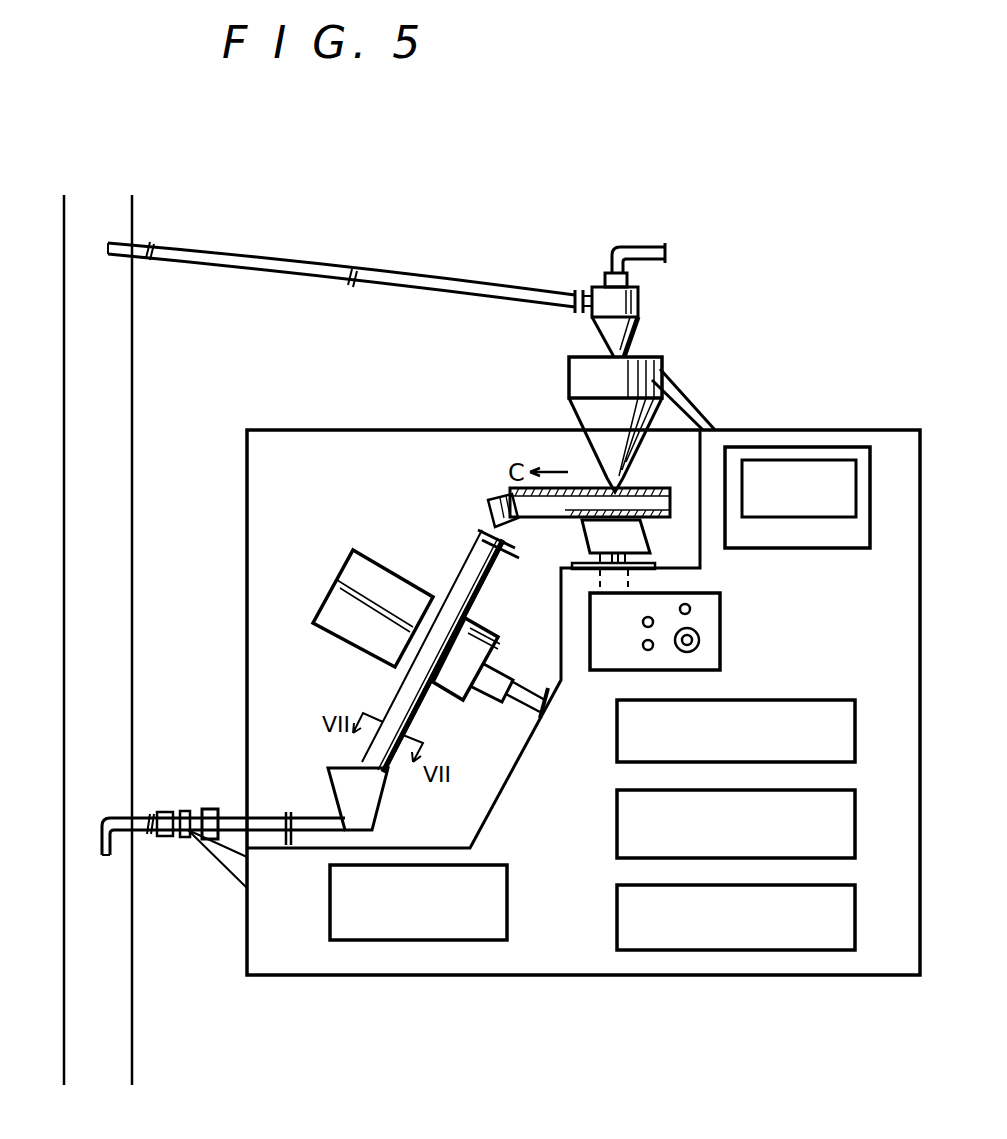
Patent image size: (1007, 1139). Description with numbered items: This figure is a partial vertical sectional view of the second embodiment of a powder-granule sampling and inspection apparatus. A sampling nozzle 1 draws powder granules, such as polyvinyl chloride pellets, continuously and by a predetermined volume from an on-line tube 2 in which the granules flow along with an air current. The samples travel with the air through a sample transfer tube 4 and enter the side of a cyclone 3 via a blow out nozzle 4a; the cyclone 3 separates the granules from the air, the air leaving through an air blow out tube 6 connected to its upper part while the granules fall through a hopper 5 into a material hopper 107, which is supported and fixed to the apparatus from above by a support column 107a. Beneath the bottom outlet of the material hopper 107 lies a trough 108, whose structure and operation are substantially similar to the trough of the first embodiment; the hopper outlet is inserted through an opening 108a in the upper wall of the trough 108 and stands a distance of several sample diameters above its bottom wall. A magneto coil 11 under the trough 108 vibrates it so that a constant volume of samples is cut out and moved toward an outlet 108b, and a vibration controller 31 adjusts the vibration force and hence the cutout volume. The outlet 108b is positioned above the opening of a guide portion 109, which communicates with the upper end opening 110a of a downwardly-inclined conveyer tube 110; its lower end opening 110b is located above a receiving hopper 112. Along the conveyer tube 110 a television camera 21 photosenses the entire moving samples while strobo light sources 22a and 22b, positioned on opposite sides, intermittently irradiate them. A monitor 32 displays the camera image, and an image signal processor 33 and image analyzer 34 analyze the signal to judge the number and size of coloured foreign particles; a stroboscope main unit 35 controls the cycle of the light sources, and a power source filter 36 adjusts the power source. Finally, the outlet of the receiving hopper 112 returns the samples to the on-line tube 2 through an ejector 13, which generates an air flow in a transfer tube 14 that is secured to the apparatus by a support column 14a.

The sampling nozzle 1 is at (152, 246).
The on-line tube 2 is at (135, 340).
The cyclone 3 is at (641, 300).
The sample transfer tube 4 is at (441, 281).
The blow out nozzle 4a is at (580, 290).
The hopper 5 is at (640, 327).
The air blow out tube 6 is at (648, 246).
The magneto coil 11 is at (647, 530).
The ejector 13 is at (210, 808).
The transfer tube 14 is at (163, 811).
The support column 14a is at (217, 862).
The television camera 21 is at (497, 662).
The strobo light source 22a is at (466, 700).
The strobo light source 22b is at (335, 585).
The vibration controller 31 is at (597, 673).
The monitor 32 is at (813, 548).
The image signal processor 33 is at (857, 732).
The image analyzer 34 is at (857, 818).
The stroboscope main unit 35 is at (857, 920).
The power source filter 36 is at (508, 913).
The material hopper 107 is at (570, 372).
The support column 107a is at (684, 398).
The trough 108 is at (695, 478).
The opening 108a is at (595, 482).
The outlet 108b is at (508, 494).
The guide portion 109 is at (490, 510).
The conveyer tube 110 is at (460, 580).
The upper end opening 110a is at (486, 566).
The lower end opening 110b is at (349, 717).
The receiving hopper 112 is at (377, 818).